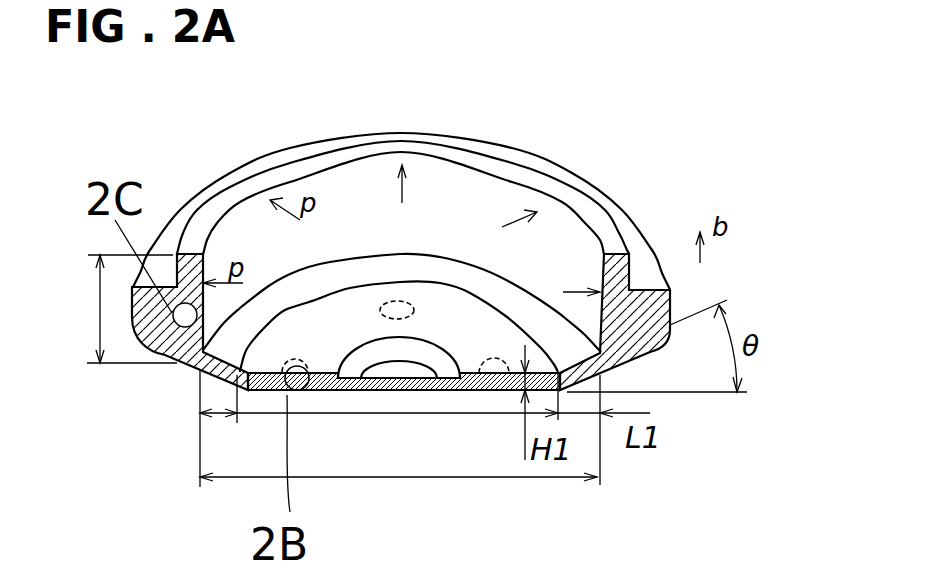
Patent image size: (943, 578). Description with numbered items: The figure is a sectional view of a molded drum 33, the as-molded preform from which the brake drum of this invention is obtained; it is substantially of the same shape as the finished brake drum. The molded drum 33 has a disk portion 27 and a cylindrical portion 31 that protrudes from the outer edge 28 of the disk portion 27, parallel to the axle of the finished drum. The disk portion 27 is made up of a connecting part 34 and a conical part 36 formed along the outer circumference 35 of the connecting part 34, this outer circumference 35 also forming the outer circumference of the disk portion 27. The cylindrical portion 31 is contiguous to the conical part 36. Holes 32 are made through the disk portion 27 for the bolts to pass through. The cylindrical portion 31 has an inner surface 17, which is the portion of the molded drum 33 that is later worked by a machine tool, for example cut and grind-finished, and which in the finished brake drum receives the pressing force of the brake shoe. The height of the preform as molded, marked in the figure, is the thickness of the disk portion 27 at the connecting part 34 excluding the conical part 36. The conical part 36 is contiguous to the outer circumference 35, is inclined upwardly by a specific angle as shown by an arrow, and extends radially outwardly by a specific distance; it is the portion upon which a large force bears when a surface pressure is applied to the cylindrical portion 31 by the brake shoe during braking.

The inner surface 17 is at (561, 242).
The disk portion 27 is at (388, 480).
The outer edge 28 is at (196, 368).
The cylindrical portion 31 is at (98, 313).
The holes 32 is at (287, 360).
The molded drum 33 is at (172, 177).
The connecting part 34 is at (421, 413).
The outer circumference 35 is at (247, 392).
The conical part 36 is at (218, 414).